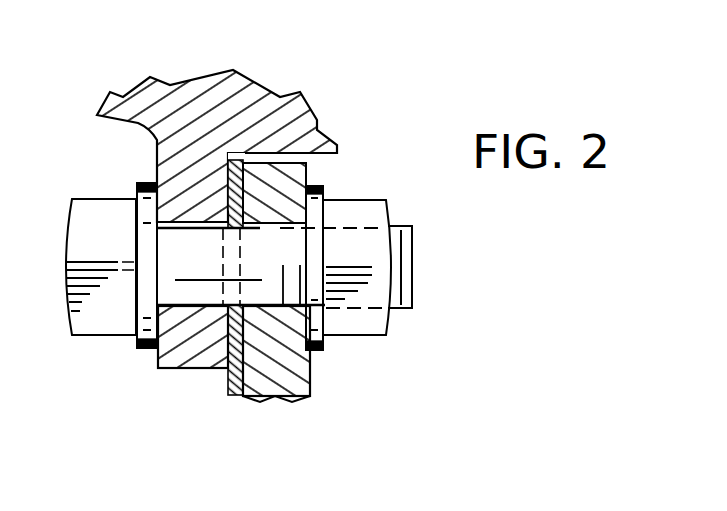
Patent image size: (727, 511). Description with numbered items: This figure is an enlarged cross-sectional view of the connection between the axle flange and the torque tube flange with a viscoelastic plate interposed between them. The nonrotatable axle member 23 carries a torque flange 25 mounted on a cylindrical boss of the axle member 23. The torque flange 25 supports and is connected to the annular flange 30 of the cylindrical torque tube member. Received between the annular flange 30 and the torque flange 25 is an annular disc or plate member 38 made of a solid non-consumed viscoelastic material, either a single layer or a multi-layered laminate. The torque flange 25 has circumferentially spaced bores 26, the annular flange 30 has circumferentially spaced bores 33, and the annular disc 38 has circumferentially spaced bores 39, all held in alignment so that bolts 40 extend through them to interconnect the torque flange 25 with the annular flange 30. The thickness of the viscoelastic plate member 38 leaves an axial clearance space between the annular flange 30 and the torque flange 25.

The axle member 23 is at (252, 80).
The torque flange 25 is at (175, 364).
The bores 26 is at (173, 228).
The annular flange 30 is at (300, 370).
The bores 33 is at (281, 224).
The annular disc or plate member 38 is at (236, 388).
The bores 39 is at (270, 385).
The bolts 40 is at (96, 322).